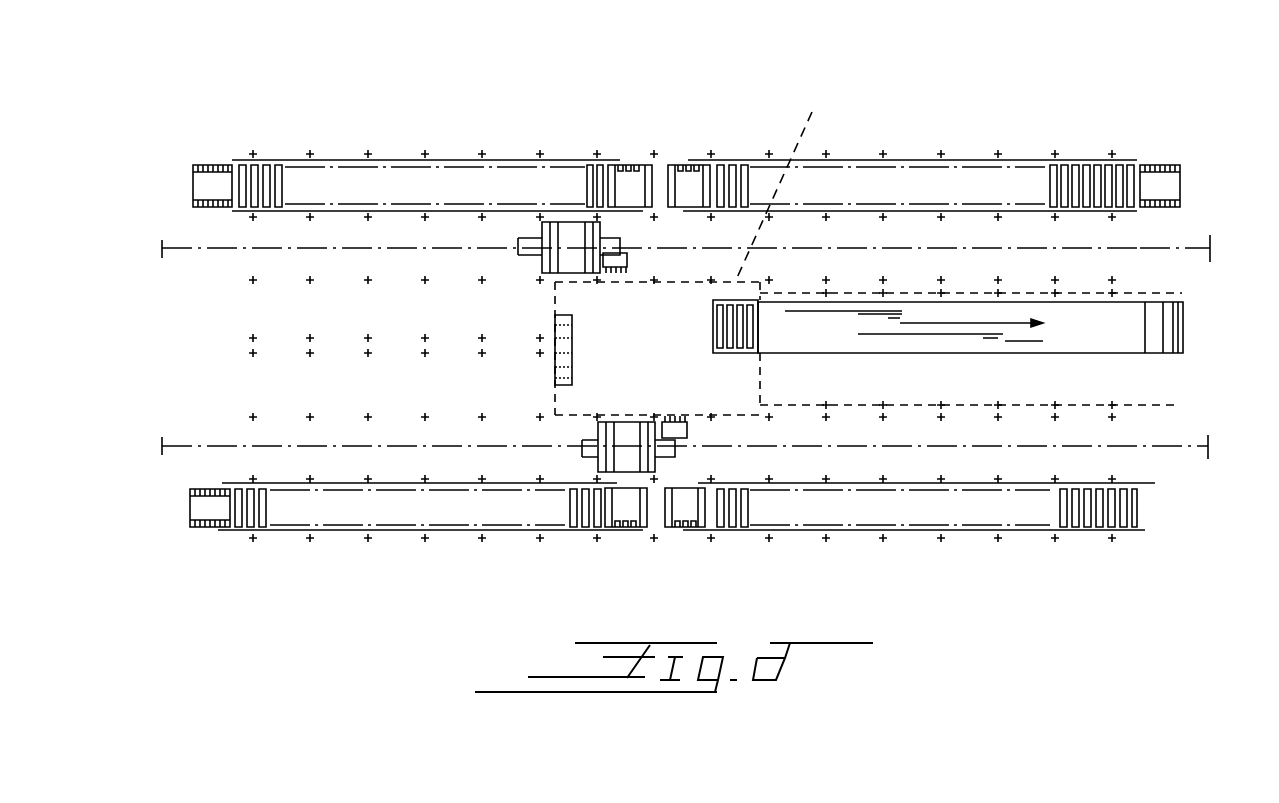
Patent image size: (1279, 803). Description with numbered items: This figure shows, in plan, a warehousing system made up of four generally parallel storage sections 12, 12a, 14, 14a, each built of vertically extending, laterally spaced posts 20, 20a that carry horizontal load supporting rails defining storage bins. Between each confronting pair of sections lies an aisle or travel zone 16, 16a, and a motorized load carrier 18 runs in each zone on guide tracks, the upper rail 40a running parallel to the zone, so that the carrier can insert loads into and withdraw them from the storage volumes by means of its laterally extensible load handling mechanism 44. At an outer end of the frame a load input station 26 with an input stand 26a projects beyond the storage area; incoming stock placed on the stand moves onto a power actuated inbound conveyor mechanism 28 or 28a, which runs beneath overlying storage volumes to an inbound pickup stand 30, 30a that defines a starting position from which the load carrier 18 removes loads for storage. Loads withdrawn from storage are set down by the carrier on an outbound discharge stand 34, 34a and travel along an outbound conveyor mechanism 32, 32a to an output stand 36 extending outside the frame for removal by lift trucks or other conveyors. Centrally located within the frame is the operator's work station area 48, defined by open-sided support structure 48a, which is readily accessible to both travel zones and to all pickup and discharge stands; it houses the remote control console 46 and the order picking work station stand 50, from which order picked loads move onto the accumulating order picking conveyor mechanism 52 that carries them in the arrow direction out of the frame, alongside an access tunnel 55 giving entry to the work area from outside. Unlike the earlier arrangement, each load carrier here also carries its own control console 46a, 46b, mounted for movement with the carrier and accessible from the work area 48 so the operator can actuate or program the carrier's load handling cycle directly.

The storage section 12 is at (306, 158).
The storage section 12a is at (300, 308).
The storage section 14 is at (300, 385).
The storage section 14a is at (257, 540).
The travel zone 16 is at (286, 262).
The travel zone 16a is at (296, 460).
The load carrier 18 is at (637, 227).
The post 20 is at (255, 221).
The post 20a is at (484, 150).
The load input station 26 is at (208, 165).
The input stand 26a is at (210, 185).
The inbound conveyor mechanism 28 is at (388, 184).
The inbound conveyor mechanism 28a is at (465, 507).
The inbound pickup stand 30 is at (628, 163).
The inbound pickup stand 30a is at (638, 527).
The outbound conveyor mechanism 32 is at (910, 160).
The outbound conveyor mechanism 32a is at (982, 530).
The outbound discharge stand 34 is at (680, 163).
The outbound discharge stand 34a is at (674, 527).
The output stand 36 is at (1168, 162).
The upper rail 40a is at (1165, 248).
The load handling mechanism 44 is at (572, 230).
The remote control console 46 is at (572, 340).
The control console 46a is at (628, 262).
The control console 46b is at (675, 420).
The operator's work station area 48 is at (782, 184).
The support structure 48a is at (654, 283).
The order picking work station stand 50 is at (737, 354).
The order picking conveyor mechanism 52 is at (1184, 318).
The access tunnel 55 is at (1115, 378).